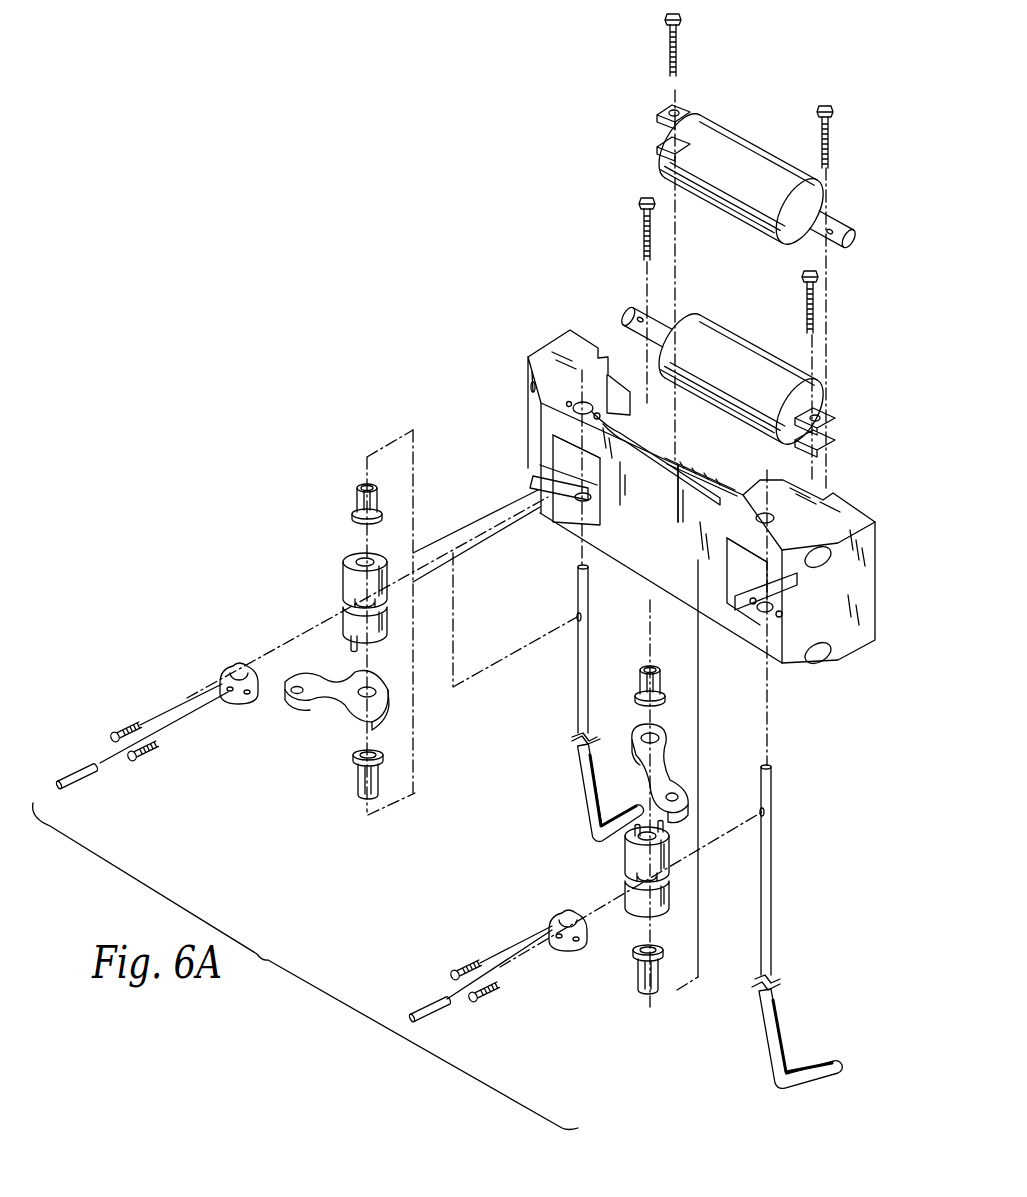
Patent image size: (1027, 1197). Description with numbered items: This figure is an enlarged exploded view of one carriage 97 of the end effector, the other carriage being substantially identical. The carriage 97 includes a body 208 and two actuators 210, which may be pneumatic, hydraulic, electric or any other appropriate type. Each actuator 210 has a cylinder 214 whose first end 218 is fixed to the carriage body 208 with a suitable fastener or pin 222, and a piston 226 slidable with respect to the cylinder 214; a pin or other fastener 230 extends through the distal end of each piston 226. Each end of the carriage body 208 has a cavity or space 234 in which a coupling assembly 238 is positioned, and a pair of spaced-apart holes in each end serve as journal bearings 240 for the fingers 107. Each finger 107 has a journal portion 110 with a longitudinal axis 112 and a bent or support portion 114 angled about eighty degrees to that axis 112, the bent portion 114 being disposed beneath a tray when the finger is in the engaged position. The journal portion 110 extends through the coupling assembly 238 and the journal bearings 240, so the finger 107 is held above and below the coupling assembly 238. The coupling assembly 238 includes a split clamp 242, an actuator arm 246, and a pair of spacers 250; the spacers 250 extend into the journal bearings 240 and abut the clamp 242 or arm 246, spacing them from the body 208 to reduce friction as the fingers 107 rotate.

The carriage 97 is at (510, 386).
The finger 107 is at (574, 726).
The journal portion 110 is at (585, 598).
The longitudinal axis 112 is at (578, 548).
The bent portion 114 is at (627, 800).
The carriage body 208 is at (670, 521).
The actuator 210 is at (755, 97).
The cylinder 214 is at (738, 167).
The first end 218 is at (655, 118).
The pin 222 is at (668, 43).
The piston 226 is at (808, 212).
The pin 230 is at (835, 138).
The cavity 234 is at (562, 472).
The coupling assembly 238 is at (340, 587).
The journal bearings 240 is at (568, 510).
The clamp 242 is at (358, 620).
The actuator arm 246 is at (342, 690).
The spacers 250 is at (352, 500).